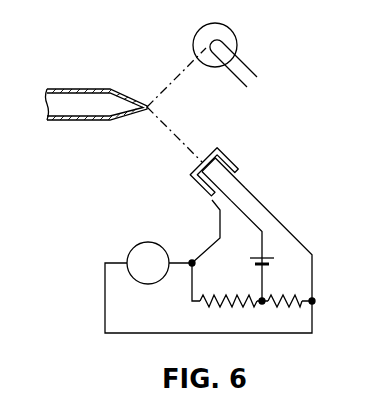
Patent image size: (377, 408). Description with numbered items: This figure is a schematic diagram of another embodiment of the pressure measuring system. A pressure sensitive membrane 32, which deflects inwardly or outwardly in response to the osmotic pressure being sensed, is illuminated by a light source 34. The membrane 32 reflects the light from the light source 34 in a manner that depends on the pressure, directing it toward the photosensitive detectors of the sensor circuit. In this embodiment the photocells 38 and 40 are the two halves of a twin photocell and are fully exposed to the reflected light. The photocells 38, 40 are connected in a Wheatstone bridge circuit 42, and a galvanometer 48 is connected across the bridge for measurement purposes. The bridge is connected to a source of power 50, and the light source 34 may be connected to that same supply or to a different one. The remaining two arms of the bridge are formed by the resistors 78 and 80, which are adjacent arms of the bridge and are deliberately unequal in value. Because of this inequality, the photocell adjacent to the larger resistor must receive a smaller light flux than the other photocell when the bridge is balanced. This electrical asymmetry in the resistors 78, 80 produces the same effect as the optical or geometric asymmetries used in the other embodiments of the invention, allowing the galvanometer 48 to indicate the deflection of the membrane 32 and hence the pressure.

The pressure sensitive membrane 32 is at (122, 92).
The light source 34 is at (237, 40).
The photocell 38 is at (196, 185).
The photocell 40 is at (223, 156).
The Wheatstone bridge circuit 42 is at (302, 233).
The galvanometer 48 is at (134, 248).
The source of power 50 is at (272, 261).
The resistor 78 is at (240, 307).
The resistor 80 is at (296, 310).